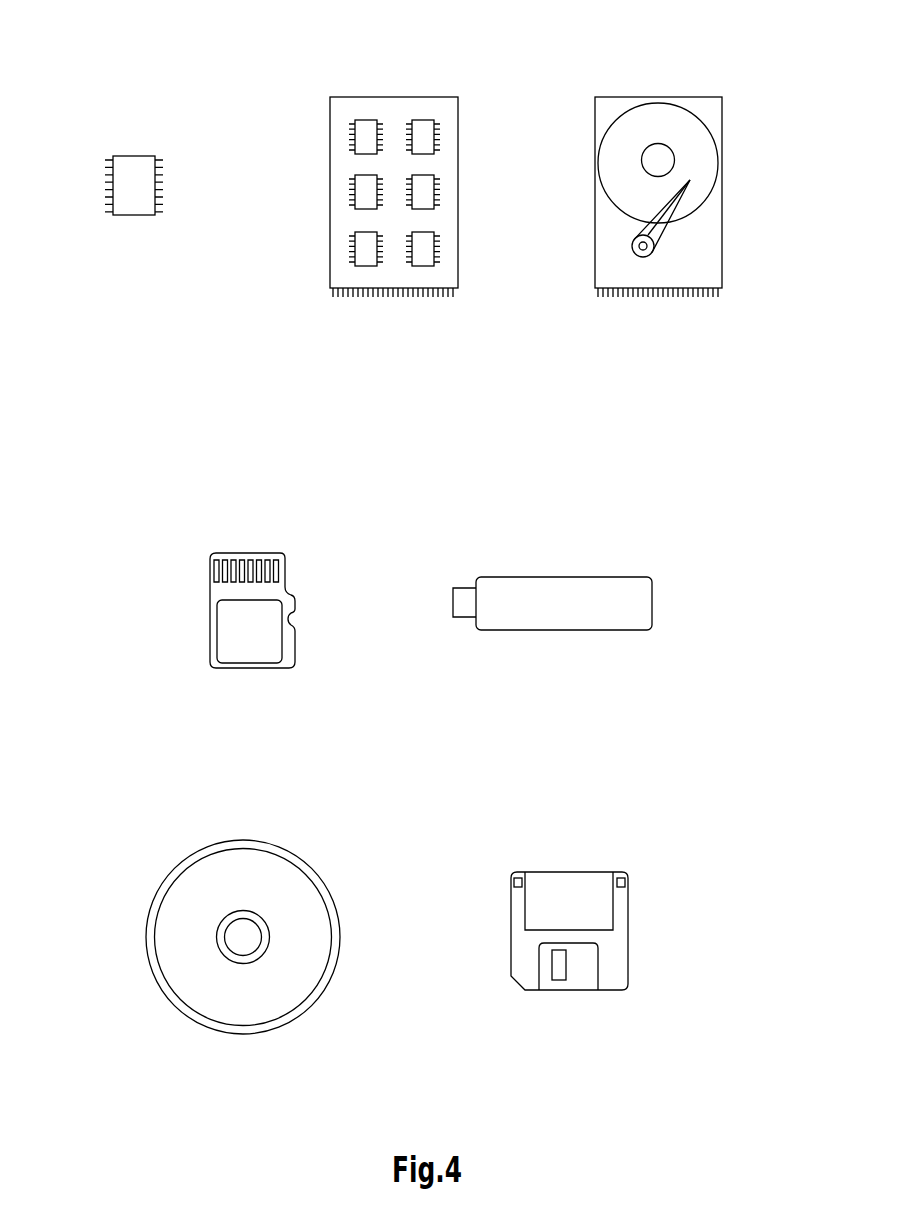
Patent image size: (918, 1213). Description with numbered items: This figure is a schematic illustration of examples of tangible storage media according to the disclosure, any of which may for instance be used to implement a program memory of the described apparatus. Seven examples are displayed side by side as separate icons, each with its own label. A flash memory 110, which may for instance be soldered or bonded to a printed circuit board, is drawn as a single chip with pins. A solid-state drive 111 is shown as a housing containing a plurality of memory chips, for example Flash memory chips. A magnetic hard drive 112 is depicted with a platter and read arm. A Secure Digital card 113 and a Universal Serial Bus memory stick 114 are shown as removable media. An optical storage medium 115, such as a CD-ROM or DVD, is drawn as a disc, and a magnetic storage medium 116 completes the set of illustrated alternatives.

The flash memory 110 is at (165, 110).
The solid-state drive 111 is at (468, 51).
The magnetic hard drive 112 is at (733, 51).
The Secure Digital (SD) card 113 is at (295, 512).
The Universal Serial Bus (USB) memory stick 114 is at (636, 532).
The optical storage medium 115 is at (330, 825).
The magnetic storage medium 116 is at (631, 827).